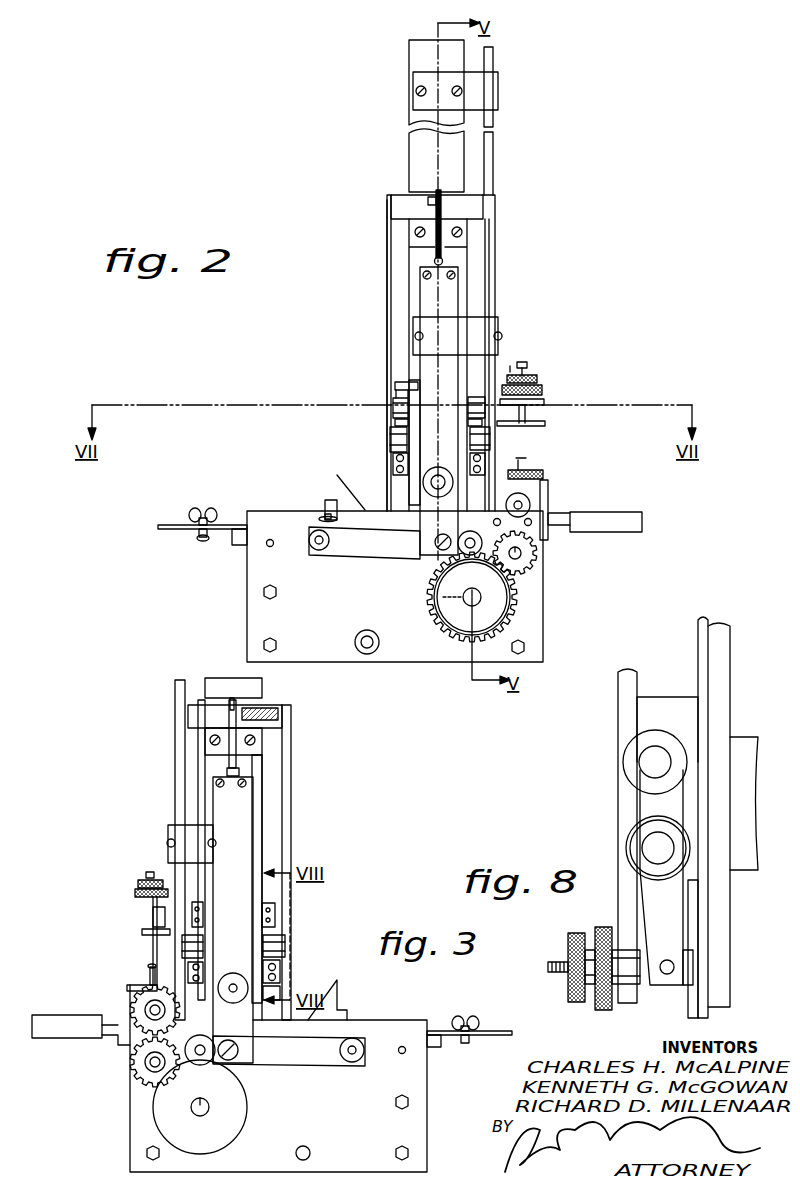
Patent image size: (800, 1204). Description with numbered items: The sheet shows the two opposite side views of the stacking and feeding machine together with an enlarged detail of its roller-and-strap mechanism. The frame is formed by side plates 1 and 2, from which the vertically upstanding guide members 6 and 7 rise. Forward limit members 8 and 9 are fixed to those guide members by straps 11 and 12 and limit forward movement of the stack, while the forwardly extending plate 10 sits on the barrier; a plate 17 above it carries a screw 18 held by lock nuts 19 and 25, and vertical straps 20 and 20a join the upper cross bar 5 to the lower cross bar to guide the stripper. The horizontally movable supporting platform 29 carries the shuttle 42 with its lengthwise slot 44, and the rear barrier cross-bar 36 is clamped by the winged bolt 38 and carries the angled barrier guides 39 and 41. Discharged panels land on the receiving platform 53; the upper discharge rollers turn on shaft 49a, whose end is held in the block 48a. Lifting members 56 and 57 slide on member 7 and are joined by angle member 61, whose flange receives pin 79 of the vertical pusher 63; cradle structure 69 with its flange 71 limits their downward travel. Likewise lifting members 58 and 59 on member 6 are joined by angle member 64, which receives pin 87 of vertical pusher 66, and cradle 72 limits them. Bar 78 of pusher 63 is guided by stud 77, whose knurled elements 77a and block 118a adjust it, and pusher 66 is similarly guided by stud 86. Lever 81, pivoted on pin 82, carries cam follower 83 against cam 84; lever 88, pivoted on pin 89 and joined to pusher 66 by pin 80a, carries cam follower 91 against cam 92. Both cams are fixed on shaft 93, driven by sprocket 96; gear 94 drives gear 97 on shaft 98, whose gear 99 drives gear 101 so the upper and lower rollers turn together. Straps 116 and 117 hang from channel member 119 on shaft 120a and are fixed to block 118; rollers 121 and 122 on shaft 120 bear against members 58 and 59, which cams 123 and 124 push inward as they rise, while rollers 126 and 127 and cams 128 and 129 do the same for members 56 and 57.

In FIG. 3, the side plate 1 is at (390, 1022).
In FIG. 2, the side plate 2 is at (266, 522).
In FIG. 2, the upper cross bar 5 is at (505, 368).
In FIG. 2, the vertically upstanding guide member 6 is at (422, 50).
In FIG. 8, the vertically upstanding guide member 6 is at (715, 620).
In FIG. 3, the vertically upstanding guide member 7 is at (255, 686).
In FIG. 2, the forward limit member 8 is at (490, 52).
In FIG. 3, the forward limit member 9 is at (182, 872).
In FIG. 2, the forwardly extending plate 10 is at (530, 424).
In FIG. 2, the strap 11 is at (478, 82).
In FIG. 2, the strap 12 is at (480, 326).
In FIG. 3, the strap 12 is at (178, 826).
In FIG. 2, the plate 17 is at (532, 394).
In FIG. 3, the plate 17 is at (138, 900).
In FIG. 2, the screw 18 is at (538, 408).
In FIG. 3, the screw 18 is at (150, 918).
In FIG. 2, the lock nut 19 is at (530, 380).
In FIG. 2, the vertical strap 20 is at (484, 424).
In FIG. 3, the vertical strap 20a is at (150, 940).
In FIG. 2, the lock nut 25 is at (528, 366).
In FIG. 2, the supporting platform 29 is at (200, 535).
In FIG. 3, the supporting platform 29 is at (468, 1042).
In FIG. 2, the cross-bar 36 is at (328, 500).
In FIG. 2, the bolt 38 is at (338, 519).
In FIG. 2, the barrier guide 39 is at (338, 476).
In FIG. 3, the barrier guide 41 is at (338, 990).
In FIG. 2, the shuttle 42 is at (168, 526).
In FIG. 3, the shuttle 42 is at (485, 1030).
In FIG. 2, the lengthwise slot 44 is at (196, 510).
In FIG. 2, the block 48a is at (540, 473).
In FIG. 2, the shaft 49a is at (530, 508).
In FIG. 2, the platform 53 is at (632, 515).
In FIG. 3, the platform 53 is at (45, 1020).
In FIG. 3, the lifting member 56 is at (290, 748).
In FIG. 3, the lifting member 57 is at (180, 742).
In FIG. 2, the lifting member 58 is at (480, 254).
In FIG. 8, the lifting member 58 is at (718, 664).
In FIG. 2, the lifting member 59 is at (386, 281).
In FIG. 3, the angle member 61 is at (272, 714).
In FIG. 3, the vertical pusher 63 is at (255, 778).
In FIG. 2, the angle member 64 is at (472, 206).
In FIG. 2, the vertical pusher 66 is at (470, 290).
In FIG. 8, the vertical pusher 66 is at (625, 688).
In FIG. 3, the cradle structure 69 is at (265, 732).
In FIG. 3, the upwardly extending flange 71 is at (225, 712).
In FIG. 2, the cradle 72 is at (409, 240).
In FIG. 3, the guiding stud 77 is at (235, 980).
In FIG. 8, the guiding stud 77 is at (548, 967).
In FIG. 3, the knurled element 77a is at (285, 948).
In FIG. 8, the knurled element 77a is at (576, 932).
In FIG. 3, the bar 78 is at (240, 810).
In FIG. 3, the pin 79 is at (228, 766).
In FIG. 2, the pin 80a is at (440, 536).
In FIG. 3, the pin 80a is at (232, 1050).
In FIG. 3, the lever 81 is at (290, 1063).
In FIG. 3, the pin 82 is at (352, 1062).
In FIG. 3, the cam follower 83 is at (200, 1038).
In FIG. 3, the cam 84 is at (238, 1115).
In FIG. 2, the vertical guide stud 86 is at (428, 472).
In FIG. 2, the pin 87 is at (432, 205).
In FIG. 2, the lever 88 is at (385, 555).
In FIG. 2, the pin 89 is at (326, 552).
In FIG. 2, the cam follower 91 is at (460, 550).
In FIG. 2, the cam 92 is at (434, 597).
In FIG. 3, the shaft 93 is at (200, 1110).
In FIG. 2, the gear 94 is at (518, 597).
In FIG. 2, the sprocket 96 is at (458, 617).
In FIG. 2, the gear 97 is at (528, 565).
In FIG. 2, the shaft 98 is at (522, 553).
In FIG. 3, the gear 99 is at (145, 1072).
In FIG. 3, the gear 101 is at (140, 1010).
In FIG. 2, the strap 116 is at (409, 419).
In FIG. 2, the strap 117 is at (490, 442).
In FIG. 8, the strap 117 is at (640, 798).
In FIG. 2, the block 118 is at (530, 500).
In FIG. 8, the block 118 is at (688, 985).
In FIG. 3, the block 118a is at (278, 990).
In FIG. 2, the channel member 119 is at (403, 382).
In FIG. 8, the channel member 119 is at (640, 714).
In FIG. 2, the shaft 120 is at (396, 438).
In FIG. 8, the shaft 120 is at (655, 850).
In FIG. 2, the shaft 120a is at (398, 400).
In FIG. 8, the shaft 120a is at (655, 760).
In FIG. 2, the roller 121 is at (486, 402).
In FIG. 8, the roller 121 is at (685, 870).
In FIG. 2, the roller 122 is at (397, 424).
In FIG. 2, the cam 123 is at (485, 462).
In FIG. 8, the cam 123 is at (700, 920).
In FIG. 2, the cam 124 is at (393, 462).
In FIG. 3, the roller 126 is at (276, 925).
In FIG. 3, the roller 127 is at (185, 945).
In FIG. 3, the cam 128 is at (280, 965).
In FIG. 3, the cam 129 is at (185, 968).